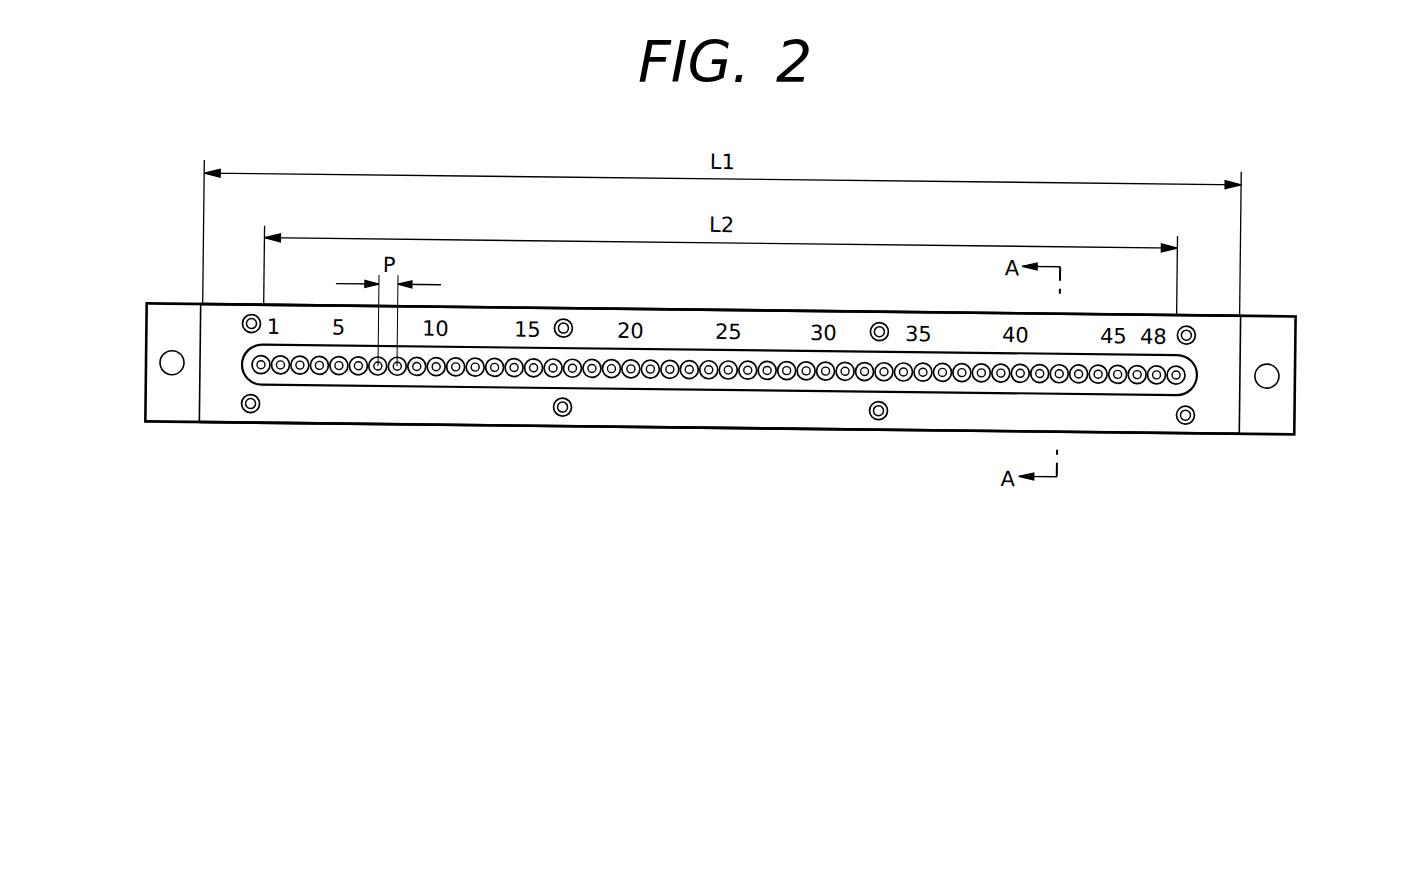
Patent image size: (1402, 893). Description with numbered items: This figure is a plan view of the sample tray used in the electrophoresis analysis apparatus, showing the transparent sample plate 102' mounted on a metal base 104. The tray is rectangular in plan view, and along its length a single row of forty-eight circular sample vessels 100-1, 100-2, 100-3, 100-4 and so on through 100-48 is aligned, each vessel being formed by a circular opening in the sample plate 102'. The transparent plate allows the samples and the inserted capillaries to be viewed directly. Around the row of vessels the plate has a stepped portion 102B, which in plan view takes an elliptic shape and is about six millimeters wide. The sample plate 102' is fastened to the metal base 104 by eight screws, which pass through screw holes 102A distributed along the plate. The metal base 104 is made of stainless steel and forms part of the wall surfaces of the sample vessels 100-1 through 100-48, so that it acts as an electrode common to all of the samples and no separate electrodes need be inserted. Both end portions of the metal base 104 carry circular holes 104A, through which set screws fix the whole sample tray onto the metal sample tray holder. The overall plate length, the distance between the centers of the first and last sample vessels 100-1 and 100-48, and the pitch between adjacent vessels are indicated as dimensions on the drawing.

The metal base 104 is at (157, 422).
The circular holes 104A is at (160, 363).
The nozzle plate 102' is at (720, 397).
The screw hole 102A is at (565, 412).
The stepped portion 102B is at (782, 384).
The sample vessel 100-1 is at (254, 370).
The sample vessel 100-2 is at (276, 373).
The sample vessel 100-3 is at (297, 373).
The sample vessel 100-4 is at (318, 373).
The sample vessel 100-48 is at (1170, 372).